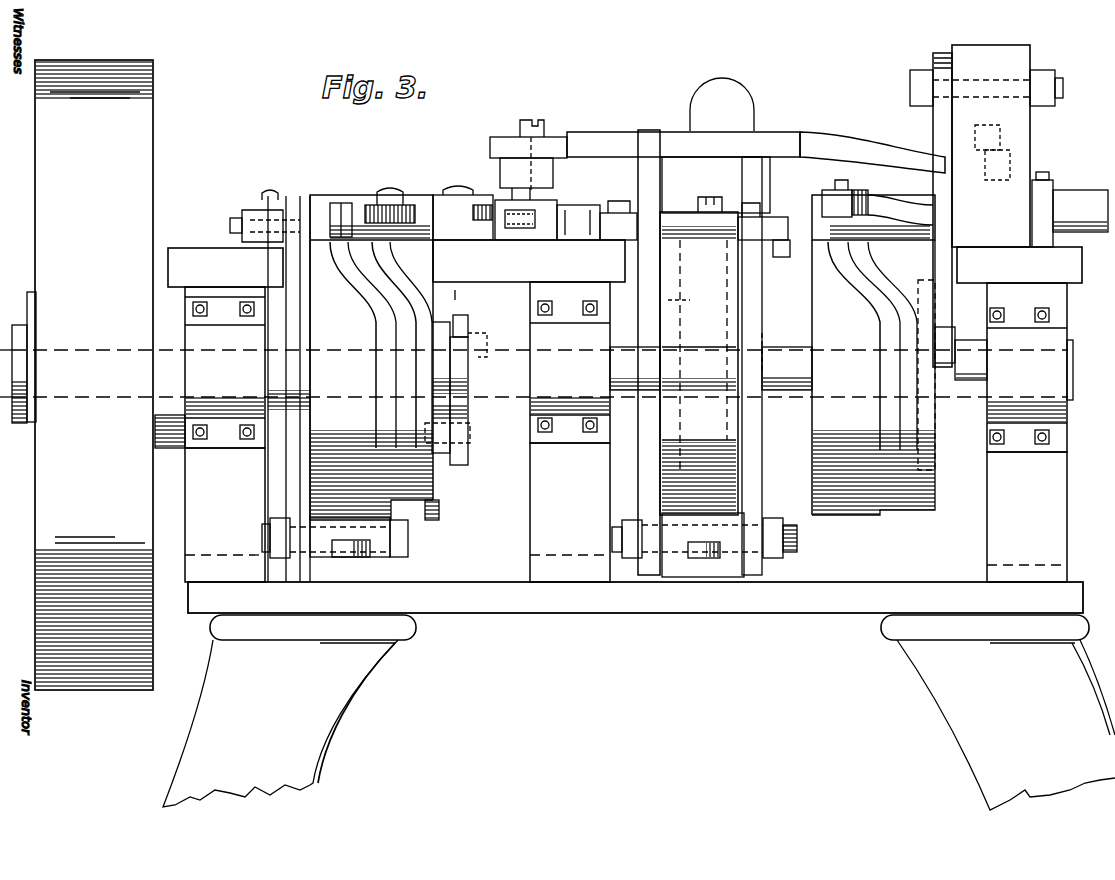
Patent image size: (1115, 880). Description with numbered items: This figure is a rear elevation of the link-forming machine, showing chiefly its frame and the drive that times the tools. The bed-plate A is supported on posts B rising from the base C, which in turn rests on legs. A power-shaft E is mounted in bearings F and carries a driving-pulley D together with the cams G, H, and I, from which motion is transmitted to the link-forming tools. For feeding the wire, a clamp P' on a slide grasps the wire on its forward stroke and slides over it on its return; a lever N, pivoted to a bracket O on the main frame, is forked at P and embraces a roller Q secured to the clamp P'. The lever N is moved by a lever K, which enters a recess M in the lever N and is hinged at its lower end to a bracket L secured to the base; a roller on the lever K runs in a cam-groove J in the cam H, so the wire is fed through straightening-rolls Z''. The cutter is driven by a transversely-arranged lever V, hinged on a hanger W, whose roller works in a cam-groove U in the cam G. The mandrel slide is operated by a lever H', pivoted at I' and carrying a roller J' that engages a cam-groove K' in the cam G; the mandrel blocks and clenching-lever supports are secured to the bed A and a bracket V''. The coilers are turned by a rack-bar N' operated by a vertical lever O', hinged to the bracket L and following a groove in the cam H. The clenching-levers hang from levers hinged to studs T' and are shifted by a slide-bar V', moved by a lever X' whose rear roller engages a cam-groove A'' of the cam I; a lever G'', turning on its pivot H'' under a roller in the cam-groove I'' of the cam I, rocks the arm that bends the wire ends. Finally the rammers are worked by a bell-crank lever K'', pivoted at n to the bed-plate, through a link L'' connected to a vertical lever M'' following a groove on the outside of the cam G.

The driving-pulley D is at (76, 375).
The power-shaft E is at (795, 388).
The base C is at (639, 696).
The bearings F is at (625, 349).
The posts B is at (626, 512).
The cam G is at (374, 357).
The cam-groove K' is at (394, 345).
The hanger W is at (443, 296).
The transversely-arranged lever V is at (466, 401).
The cam-groove U is at (418, 450).
The link L'' is at (260, 199).
The roller J' is at (318, 188).
The lever H' is at (383, 178).
The pivot I' is at (390, 169).
The bell-crank lever K'' is at (462, 194).
The pivot n is at (478, 178).
The straightening-rolls Z'' is at (553, 203).
The clamp P' is at (526, 179).
The fork P is at (518, 131).
The roller Q is at (541, 130).
The recess M is at (683, 121).
The lever N is at (848, 129).
The lever K is at (637, 330).
The studs T' is at (722, 104).
The bracket V'' is at (716, 185).
The rack-bar N' is at (765, 241).
The vertical lever O' is at (766, 366).
The cam H is at (699, 356).
The cam-groove J is at (652, 359).
The bracket L is at (704, 545).
The vertical lever M'' is at (319, 522).
The cam I is at (873, 355).
The cam-groove A'' is at (917, 354).
The cam-groove I'' is at (944, 375).
The lever X' is at (877, 196).
The bed-plate A is at (529, 261).
The pivot H'' is at (921, 210).
The lever G'' is at (986, 146).
The bracket O is at (1038, 189).
The slide-bar V' is at (1080, 211).